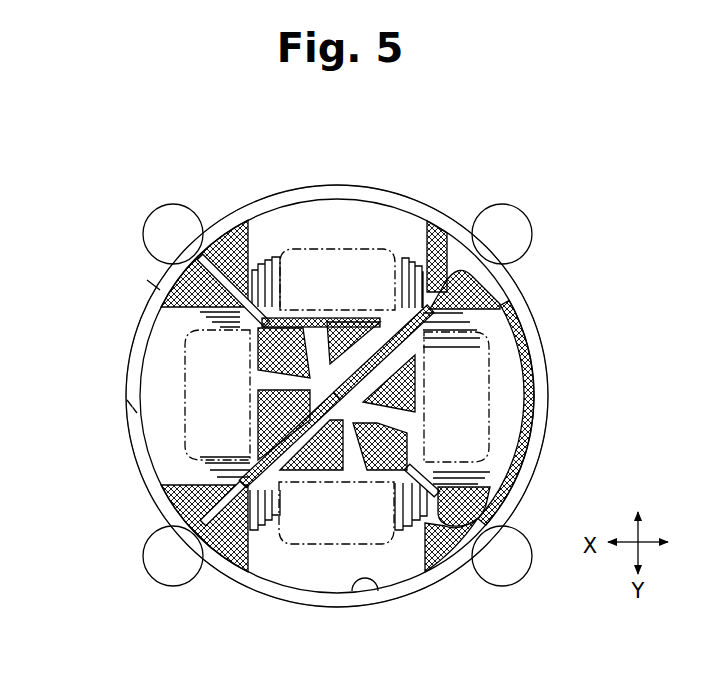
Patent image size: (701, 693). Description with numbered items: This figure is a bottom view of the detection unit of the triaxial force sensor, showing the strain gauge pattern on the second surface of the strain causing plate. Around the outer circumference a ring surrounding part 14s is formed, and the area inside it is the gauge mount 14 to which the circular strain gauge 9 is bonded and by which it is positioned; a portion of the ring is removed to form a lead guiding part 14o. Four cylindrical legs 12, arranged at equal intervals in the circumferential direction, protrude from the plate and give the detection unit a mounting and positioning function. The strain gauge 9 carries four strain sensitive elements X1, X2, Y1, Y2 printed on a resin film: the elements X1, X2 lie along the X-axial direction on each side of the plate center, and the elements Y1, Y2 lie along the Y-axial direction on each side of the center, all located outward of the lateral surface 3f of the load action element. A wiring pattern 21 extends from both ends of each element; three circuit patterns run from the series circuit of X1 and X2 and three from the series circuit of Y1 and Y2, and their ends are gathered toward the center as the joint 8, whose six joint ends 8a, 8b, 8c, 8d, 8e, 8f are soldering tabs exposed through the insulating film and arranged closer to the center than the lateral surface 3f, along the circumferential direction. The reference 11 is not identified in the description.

The lateral surface of the load action element 3f is at (540, 468).
The joint 8 is at (348, 472).
The joint end 8a is at (367, 408).
The joint end 8b is at (322, 398).
The joint end 8c is at (312, 385).
The joint end 8d is at (330, 363).
The joint end 8e is at (373, 478).
The joint end 8f is at (322, 470).
The strain gauge 9 is at (385, 195).
The stator 11 is at (556, 398).
The legs 12 is at (143, 220).
The gauge mount 14 is at (166, 432).
The lead guiding part 14o is at (128, 350).
The ring surrounding part 14s is at (369, 594).
The wiring pattern 21 is at (447, 224).
The strain sensitive element X1 is at (485, 337).
The strain sensitive element X2 is at (205, 470).
The strain sensitive element Y1 is at (273, 256).
The strain sensitive element Y2 is at (268, 522).